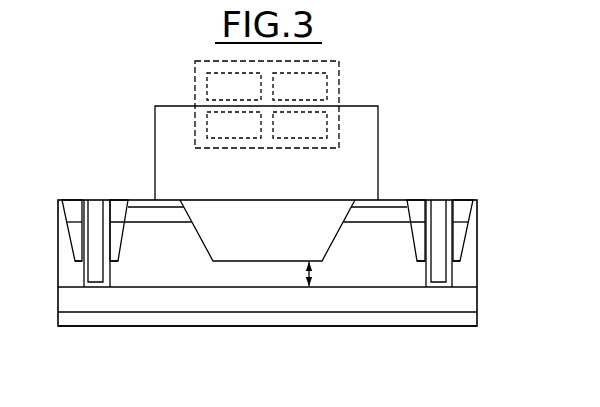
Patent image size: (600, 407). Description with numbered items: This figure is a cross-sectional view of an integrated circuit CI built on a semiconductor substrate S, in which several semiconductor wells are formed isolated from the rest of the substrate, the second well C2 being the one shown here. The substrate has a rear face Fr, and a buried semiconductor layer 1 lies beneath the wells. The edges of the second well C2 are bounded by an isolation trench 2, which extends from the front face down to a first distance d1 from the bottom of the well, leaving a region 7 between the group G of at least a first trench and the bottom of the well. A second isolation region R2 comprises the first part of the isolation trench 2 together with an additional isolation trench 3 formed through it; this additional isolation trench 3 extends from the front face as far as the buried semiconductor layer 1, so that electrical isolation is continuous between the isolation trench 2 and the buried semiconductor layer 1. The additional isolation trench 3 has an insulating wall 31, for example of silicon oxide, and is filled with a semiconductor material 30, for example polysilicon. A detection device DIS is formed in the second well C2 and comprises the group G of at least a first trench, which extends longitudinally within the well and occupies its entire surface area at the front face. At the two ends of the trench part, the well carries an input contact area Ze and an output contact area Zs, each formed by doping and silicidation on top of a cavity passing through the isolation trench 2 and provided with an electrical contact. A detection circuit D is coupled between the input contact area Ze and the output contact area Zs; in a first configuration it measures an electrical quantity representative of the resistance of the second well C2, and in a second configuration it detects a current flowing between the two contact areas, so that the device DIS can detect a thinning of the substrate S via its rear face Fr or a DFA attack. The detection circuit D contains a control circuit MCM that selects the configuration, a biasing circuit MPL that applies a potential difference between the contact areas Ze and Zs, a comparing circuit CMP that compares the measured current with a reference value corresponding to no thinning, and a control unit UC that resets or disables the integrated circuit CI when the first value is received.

The buried semiconductor layer 1 is at (113, 300).
The isolation trench 2 is at (267, 230).
The additional isolation trench 3 is at (301, 212).
The region 7 is at (238, 275).
The semiconductor material 30 is at (440, 213).
The insulating wall 31 is at (449, 243).
The integrated circuit CI is at (441, 78).
The detection circuit D is at (286, 104).
The detection device DIS is at (147, 124).
The biasing circuit MPL is at (234, 86).
The control circuit MCM is at (300, 86).
The comparing circuit CMP is at (234, 125).
The control unit UC is at (300, 125).
The group of at least a first trench G is at (268, 218).
The second well C2 is at (167, 237).
The input contact area Ze is at (146, 194).
The output contact area Zs is at (388, 194).
The second isolation region R2 is at (78, 268).
The first distance d1 is at (306, 274).
The semiconductor substrate S is at (203, 327).
The rear face Fr is at (267, 326).